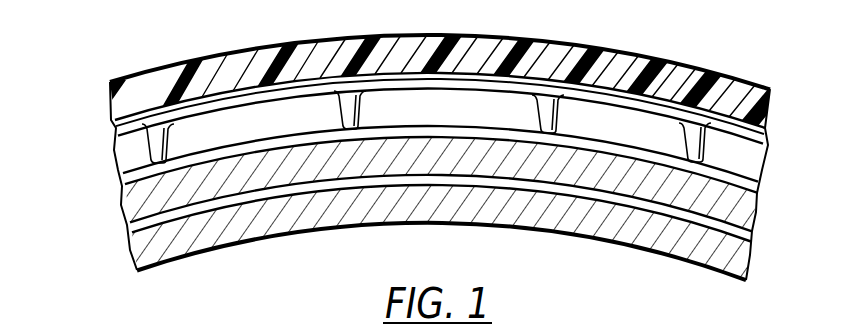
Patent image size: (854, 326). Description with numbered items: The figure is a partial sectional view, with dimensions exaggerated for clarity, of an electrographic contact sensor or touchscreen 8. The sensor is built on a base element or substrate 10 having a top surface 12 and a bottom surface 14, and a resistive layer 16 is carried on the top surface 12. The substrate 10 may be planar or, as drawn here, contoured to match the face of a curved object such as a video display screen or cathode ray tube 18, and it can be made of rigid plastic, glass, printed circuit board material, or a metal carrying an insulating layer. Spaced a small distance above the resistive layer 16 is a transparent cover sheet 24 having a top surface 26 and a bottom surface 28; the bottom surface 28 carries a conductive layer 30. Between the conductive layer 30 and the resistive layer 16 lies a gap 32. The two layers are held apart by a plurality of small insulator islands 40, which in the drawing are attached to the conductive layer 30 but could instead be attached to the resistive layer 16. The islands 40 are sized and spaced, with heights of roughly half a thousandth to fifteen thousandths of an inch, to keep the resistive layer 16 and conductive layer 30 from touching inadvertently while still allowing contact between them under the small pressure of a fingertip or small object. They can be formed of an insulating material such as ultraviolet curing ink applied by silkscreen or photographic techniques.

The electrographic contact sensor 8 is at (113, 245).
The substrate 10 is at (744, 213).
The top surface 12 is at (744, 182).
The bottom surface 14 is at (444, 91).
The resistive layer 16 is at (118, 187).
The cathode ray tube 18 is at (248, 228).
The transparent cover sheet 24 is at (128, 97).
The top surface 26 is at (249, 50).
The bottom surface 28 is at (766, 152).
The conductive layer 30 is at (132, 131).
The gap 32 is at (116, 157).
The insulator islands 40 is at (697, 137).